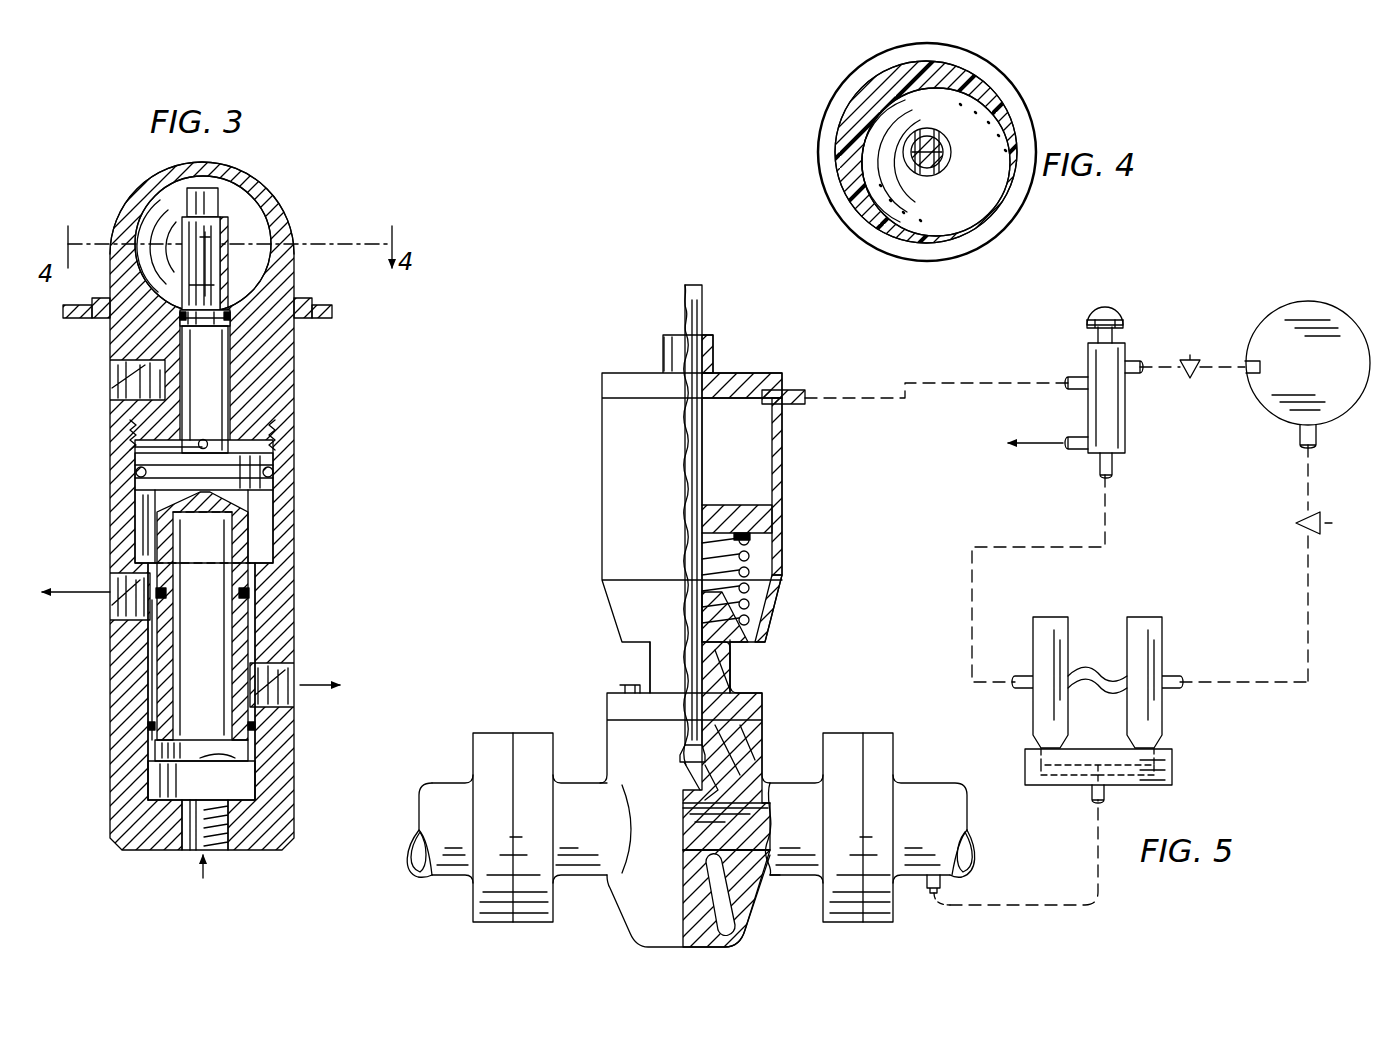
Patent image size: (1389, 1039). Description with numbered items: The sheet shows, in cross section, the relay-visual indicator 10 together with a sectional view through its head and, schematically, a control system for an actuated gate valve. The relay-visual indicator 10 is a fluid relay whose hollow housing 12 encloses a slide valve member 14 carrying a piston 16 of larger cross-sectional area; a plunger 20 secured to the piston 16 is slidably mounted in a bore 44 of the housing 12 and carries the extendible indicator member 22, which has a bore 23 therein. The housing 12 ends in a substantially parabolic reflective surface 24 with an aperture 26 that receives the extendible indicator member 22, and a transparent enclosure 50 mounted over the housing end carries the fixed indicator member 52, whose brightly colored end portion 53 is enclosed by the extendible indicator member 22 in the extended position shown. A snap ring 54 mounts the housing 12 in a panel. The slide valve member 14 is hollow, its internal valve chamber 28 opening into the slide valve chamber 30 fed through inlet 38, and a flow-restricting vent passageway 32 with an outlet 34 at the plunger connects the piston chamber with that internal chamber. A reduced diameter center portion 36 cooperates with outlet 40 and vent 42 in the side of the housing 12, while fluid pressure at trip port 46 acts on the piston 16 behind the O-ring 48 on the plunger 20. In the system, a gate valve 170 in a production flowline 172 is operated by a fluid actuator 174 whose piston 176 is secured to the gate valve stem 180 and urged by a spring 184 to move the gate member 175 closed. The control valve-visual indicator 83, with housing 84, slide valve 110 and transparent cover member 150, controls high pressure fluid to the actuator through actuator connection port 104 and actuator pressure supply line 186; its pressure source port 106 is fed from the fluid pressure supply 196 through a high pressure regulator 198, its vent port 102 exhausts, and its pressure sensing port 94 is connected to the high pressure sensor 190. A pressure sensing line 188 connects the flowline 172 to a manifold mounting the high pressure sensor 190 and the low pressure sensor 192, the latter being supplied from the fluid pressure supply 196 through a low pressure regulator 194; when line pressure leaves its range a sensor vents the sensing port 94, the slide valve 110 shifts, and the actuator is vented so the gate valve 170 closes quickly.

In FIG. 3, the relay-visual indicator 10 is at (343, 312).
In FIG. 3, the housing 12 is at (240, 575).
In FIG. 3, the slide valve member 14 is at (248, 586).
In FIG. 3, the piston 16 is at (242, 470).
In FIG. 3, the plunger 20 is at (203, 368).
In FIG. 3, the extendible indicator member 22 is at (225, 302).
In FIG. 4, the extendible indicator member 22 is at (944, 166).
In FIG. 3, the bore 23 is at (226, 262).
In FIG. 3, the reflective surface 24 is at (158, 263).
In FIG. 4, the reflective surface 24 is at (944, 195).
In FIG. 4, the aperture 26 is at (912, 136).
In FIG. 3, the internal valve chamber 28 is at (208, 736).
In FIG. 3, the slide valve chamber 30 is at (226, 782).
In FIG. 3, the vent passageway 32 is at (150, 497).
In FIG. 3, the outlet 34 is at (198, 446).
In FIG. 3, the reduced diameter center portion 36 is at (162, 673).
In FIG. 3, the inlet 38 is at (210, 838).
In FIG. 3, the outlet 40 is at (278, 670).
In FIG. 3, the vent 42 is at (122, 605).
In FIG. 3, the bore 44 is at (140, 430).
In FIG. 3, the trip port 46 is at (122, 366).
In FIG. 3, the O-ring 48 is at (231, 316).
In FIG. 5, the O-ring 48 is at (1088, 320).
In FIG. 3, the transparent enclosure 50 is at (148, 192).
In FIG. 4, the transparent enclosure 50 is at (855, 183).
In FIG. 3, the fixed indicator member 52 is at (214, 205).
In FIG. 4, the fixed indicator member 52 is at (930, 148).
In FIG. 3, the end portion 53 is at (226, 236).
In FIG. 4, the snap ring 54 is at (970, 68).
In FIG. 5, the control valve-visual indicator 83 is at (1131, 318).
In FIG. 5, the housing 84 is at (1112, 413).
In FIG. 5, the pressure sensing port 94 is at (1112, 465).
In FIG. 5, the vent port 102 is at (1082, 448).
In FIG. 5, the actuator connection port 104 is at (1072, 392).
In FIG. 5, the pressure source port 106 is at (1137, 360).
In FIG. 5, the slide valve 110 is at (1092, 333).
In FIG. 5, the transparent cover member 150 is at (1108, 300).
In FIG. 5, the gate valve 170 is at (702, 777).
In FIG. 5, the production flowline 172 is at (935, 792).
In FIG. 5, the fluid actuator 174 is at (620, 472).
In FIG. 5, the gate member 175 is at (708, 770).
In FIG. 5, the piston 176 is at (730, 505).
In FIG. 5, the gate valve stem 180 is at (692, 665).
In FIG. 5, the spring 184 is at (732, 462).
In FIG. 5, the actuator pressure supply line 186 is at (793, 392).
In FIG. 5, the pressure sensing line 188 is at (1022, 902).
In FIG. 5, the high pressure level pressure sensor 190 is at (1056, 617).
In FIG. 5, the low pressure level pressure sensor 192 is at (1153, 638).
In FIG. 5, the low pressure regulator 194 is at (1298, 528).
In FIG. 5, the fluid pressure supply 196 is at (1330, 412).
In FIG. 5, the high pressure regulator 198 is at (1194, 375).